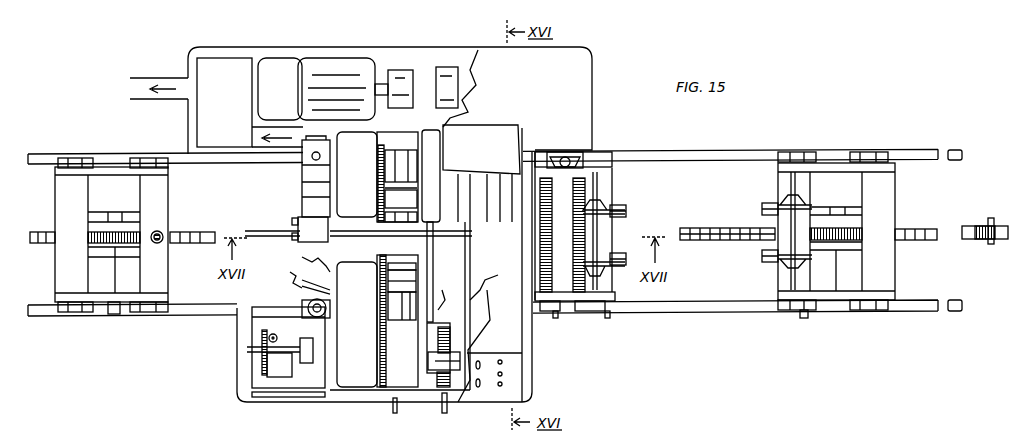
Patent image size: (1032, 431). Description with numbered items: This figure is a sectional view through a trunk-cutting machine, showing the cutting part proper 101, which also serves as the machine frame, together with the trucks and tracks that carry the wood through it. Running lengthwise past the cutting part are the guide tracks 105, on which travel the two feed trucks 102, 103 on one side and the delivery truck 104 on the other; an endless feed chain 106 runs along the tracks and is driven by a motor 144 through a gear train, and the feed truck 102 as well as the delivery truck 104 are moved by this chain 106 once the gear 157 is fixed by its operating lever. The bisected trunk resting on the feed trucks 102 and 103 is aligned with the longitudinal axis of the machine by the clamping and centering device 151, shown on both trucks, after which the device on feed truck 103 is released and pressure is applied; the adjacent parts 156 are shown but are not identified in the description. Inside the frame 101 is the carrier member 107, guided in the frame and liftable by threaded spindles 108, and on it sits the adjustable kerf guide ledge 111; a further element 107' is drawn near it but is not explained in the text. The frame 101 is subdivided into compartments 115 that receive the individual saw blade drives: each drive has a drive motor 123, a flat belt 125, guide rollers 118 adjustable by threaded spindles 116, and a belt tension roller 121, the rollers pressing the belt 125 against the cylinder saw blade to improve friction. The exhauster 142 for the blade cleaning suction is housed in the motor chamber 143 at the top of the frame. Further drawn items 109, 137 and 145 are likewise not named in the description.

The cutting part 101 is at (544, 88).
The feed truck 102 is at (882, 198).
The feed truck 103 is at (604, 182).
The delivery truck 104 is at (62, 189).
The guide tracks 105 is at (80, 0).
The endless feed chain 106 is at (982, 227).
The carrier member 107 is at (339, 259).
The upper drive block 107' is at (297, 158).
The threaded spindles 108 is at (311, 158).
The base plate 109 is at (290, 400).
The adjustable kerf guide ledge 111 is at (270, 229).
The compartments 115 is at (394, 377).
The threaded spindles 116 is at (386, 171).
The guide rollers 118 is at (393, 199).
The belt tension roller 121 is at (445, 373).
The drive motor 123 is at (278, 67).
The belt 125 is at (442, 296).
The cover panel 137 is at (496, 156).
The exhauster 142 is at (236, 111).
The motor chamber 143 is at (230, 47).
The motor 144 is at (291, 273).
The latch mechanism 145 is at (274, 360).
The clamping and centering device 151 is at (600, 203).
The clamp block 156 is at (622, 210).
The gear 157 is at (110, 232).